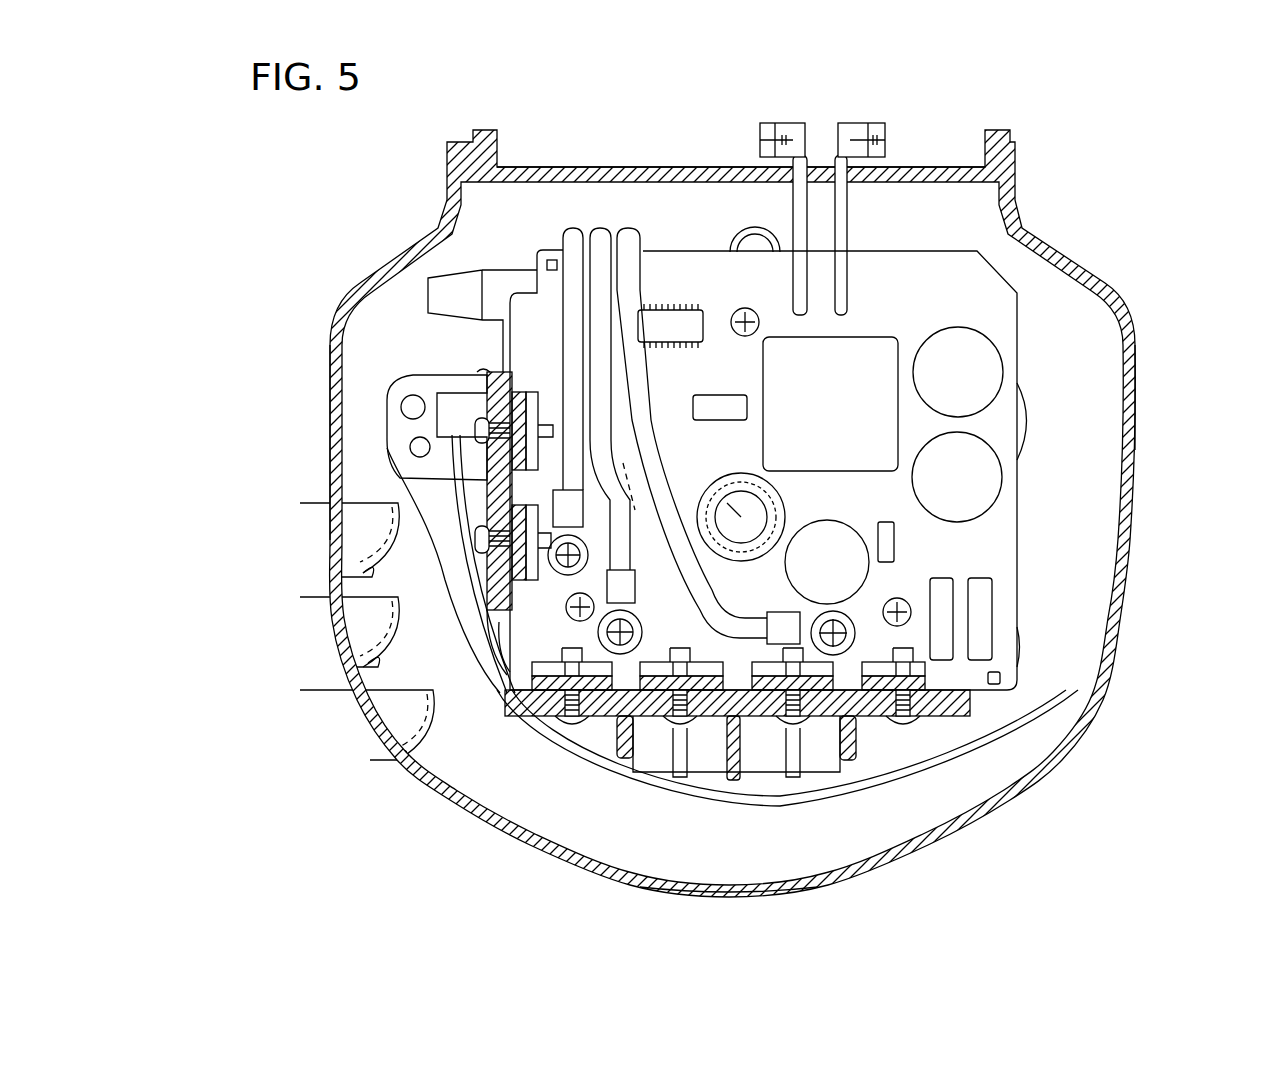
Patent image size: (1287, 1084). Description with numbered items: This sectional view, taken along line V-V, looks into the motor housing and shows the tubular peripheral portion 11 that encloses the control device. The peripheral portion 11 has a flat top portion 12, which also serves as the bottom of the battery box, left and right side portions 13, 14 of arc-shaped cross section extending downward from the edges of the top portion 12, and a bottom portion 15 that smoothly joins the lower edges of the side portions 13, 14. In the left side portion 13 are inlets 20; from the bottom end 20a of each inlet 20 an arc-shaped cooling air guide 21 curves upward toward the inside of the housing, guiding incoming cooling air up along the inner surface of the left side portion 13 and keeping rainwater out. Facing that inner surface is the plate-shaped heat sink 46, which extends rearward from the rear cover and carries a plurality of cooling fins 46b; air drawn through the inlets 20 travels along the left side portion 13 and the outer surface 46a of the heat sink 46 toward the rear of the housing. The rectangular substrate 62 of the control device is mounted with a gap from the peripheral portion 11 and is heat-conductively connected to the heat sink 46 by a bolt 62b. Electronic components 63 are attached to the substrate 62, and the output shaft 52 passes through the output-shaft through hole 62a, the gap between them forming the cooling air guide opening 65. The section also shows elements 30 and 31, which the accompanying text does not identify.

The peripheral portion 11 is at (1063, 266).
The top portion 12 is at (623, 167).
The left side portion 13 is at (328, 427).
The right side portion 14 is at (1138, 458).
The bottom portion 15 is at (729, 886).
The inlet 20 is at (335, 525).
The bottom end 20a is at (338, 555).
The cooling air guide 21 is at (362, 578).
The heater unit 30 is at (1036, 623).
The heater unit cover 31 is at (813, 794).
The heat sink 46 is at (478, 372).
The outer surface 46a is at (475, 432).
The cooling fins 46b is at (487, 378).
The output shaft 52 is at (708, 494).
The substrate 62 is at (997, 307).
The output-shaft through hole 62a is at (724, 560).
The bolt 62b is at (400, 397).
The electronic components 63 is at (985, 352).
The cooling air guide opening 65 is at (781, 503).